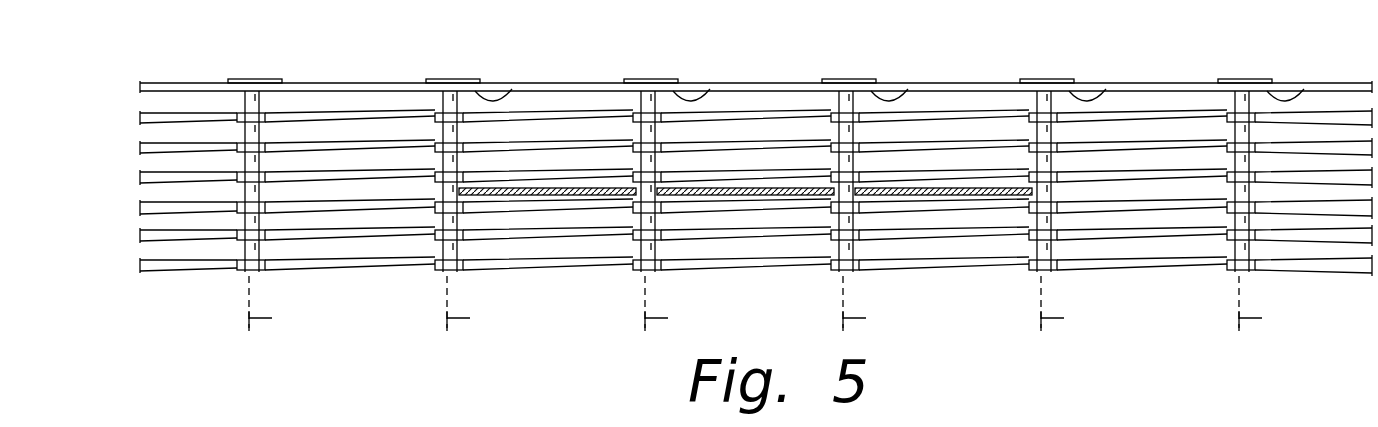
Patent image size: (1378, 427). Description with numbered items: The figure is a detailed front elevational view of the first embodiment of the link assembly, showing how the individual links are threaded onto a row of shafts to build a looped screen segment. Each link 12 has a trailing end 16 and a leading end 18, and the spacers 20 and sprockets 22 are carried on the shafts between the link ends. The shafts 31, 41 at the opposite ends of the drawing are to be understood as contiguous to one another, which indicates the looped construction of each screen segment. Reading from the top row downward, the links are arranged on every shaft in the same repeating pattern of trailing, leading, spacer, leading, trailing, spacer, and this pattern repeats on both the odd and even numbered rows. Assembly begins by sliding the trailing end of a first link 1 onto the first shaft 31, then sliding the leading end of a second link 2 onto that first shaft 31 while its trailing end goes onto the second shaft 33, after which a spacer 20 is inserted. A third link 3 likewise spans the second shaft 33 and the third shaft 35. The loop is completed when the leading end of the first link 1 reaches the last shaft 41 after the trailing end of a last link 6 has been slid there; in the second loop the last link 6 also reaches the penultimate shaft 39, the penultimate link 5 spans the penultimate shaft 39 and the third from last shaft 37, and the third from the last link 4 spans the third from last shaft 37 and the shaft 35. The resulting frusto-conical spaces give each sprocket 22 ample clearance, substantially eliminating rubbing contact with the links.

The first link 1 is at (177, 107).
The link 12 is at (303, 80).
The trailing end 16 is at (467, 80).
The leading end 18 is at (517, 93).
The last link 6 is at (388, 110).
The penultimate link 5 is at (590, 108).
The third from the last link 4 is at (745, 113).
The third link 3 is at (945, 115).
The second link 2 is at (1143, 112).
The spacer 20 is at (833, 253).
The sprocket 22 is at (735, 197).
The last shaft 41 is at (280, 306).
The penultimate shaft 39 is at (478, 306).
The third from last shaft 37 is at (676, 306).
The third shaft 35 is at (874, 306).
The second shaft 33 is at (1072, 306).
The first shaft 31 is at (1270, 306).